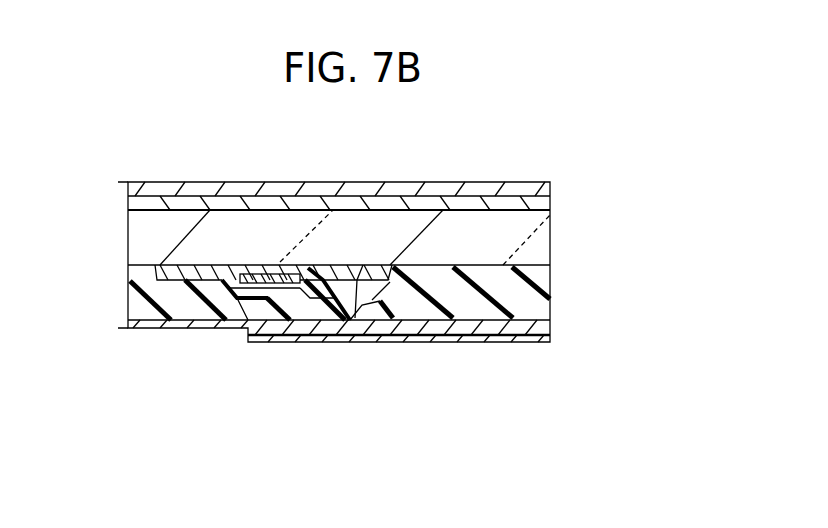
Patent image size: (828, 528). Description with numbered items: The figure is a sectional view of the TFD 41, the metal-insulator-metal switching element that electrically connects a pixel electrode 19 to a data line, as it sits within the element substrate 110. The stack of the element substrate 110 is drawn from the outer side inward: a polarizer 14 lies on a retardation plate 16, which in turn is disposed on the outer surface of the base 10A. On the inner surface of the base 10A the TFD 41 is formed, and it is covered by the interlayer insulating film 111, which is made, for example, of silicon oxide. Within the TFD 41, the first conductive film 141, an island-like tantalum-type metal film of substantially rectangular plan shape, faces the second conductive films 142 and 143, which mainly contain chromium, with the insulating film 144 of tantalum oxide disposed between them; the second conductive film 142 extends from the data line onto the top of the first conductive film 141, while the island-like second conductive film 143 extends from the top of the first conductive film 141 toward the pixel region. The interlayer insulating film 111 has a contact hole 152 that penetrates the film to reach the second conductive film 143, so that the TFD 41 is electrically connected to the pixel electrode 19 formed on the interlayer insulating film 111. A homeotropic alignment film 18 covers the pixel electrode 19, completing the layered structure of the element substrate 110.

The element substrate 110 is at (122, 328).
The polarizer 14 is at (550, 187).
The retardation plate 16 is at (550, 204).
The base 10A is at (550, 241).
The interlayer insulating film 111 is at (550, 284).
The TFD 41 is at (216, 286).
The first conductive film 141 is at (262, 274).
The second conductive film 142 is at (188, 265).
The second conductive film 143 is at (361, 266).
The insulating film 144 is at (272, 298).
The contact hole 152 is at (385, 325).
The pixel electrode 19 is at (550, 328).
The homeotropic alignment film 18 is at (550, 341).